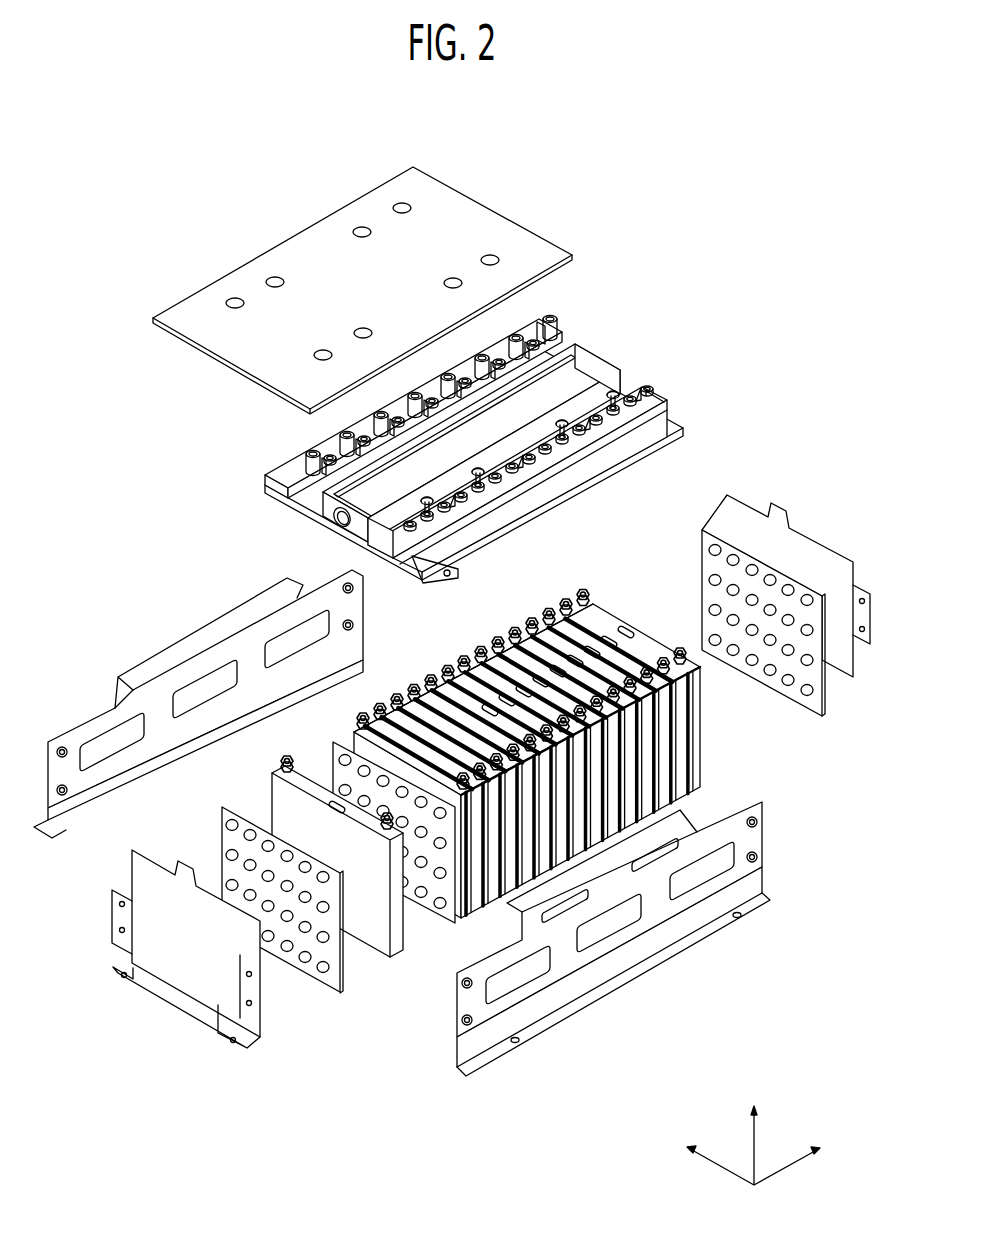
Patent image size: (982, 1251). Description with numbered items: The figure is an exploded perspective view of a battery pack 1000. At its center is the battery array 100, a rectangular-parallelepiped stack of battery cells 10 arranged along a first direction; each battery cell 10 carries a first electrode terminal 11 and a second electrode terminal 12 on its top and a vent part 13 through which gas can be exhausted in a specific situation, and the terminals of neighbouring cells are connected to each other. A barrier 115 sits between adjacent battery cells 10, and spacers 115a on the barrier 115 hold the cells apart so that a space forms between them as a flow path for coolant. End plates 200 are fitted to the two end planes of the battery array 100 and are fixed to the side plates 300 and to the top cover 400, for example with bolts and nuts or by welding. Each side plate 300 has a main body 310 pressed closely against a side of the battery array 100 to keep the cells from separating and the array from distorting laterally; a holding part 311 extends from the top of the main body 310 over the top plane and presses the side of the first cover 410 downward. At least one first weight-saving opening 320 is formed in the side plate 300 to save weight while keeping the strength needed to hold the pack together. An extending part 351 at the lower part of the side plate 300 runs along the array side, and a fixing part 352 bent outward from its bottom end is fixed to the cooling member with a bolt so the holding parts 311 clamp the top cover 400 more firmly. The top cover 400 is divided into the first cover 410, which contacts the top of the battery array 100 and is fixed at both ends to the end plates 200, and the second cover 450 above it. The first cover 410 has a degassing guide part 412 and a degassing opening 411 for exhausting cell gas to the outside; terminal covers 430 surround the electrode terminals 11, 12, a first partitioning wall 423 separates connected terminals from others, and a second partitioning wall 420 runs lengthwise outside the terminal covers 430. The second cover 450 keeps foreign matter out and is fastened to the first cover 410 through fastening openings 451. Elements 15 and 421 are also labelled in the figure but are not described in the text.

The battery pack 1000 is at (156, 151).
The battery cell 10 is at (284, 766).
The first electrode terminal 11 is at (575, 600).
The second electrode terminal 12 is at (680, 652).
The vent part 13 is at (630, 636).
The cell cap / vent 15 is at (443, 672).
The battery array 100 is at (703, 716).
The barrier 115 is at (222, 847).
The spacer 115a is at (231, 822).
The end plate 200 is at (190, 972).
The side plate 300 is at (170, 636).
The main body 310 is at (760, 832).
The holding part 311 is at (682, 808).
The first weight-saving opening 320 is at (614, 921).
The extending part 351 is at (758, 878).
The fixing part 352 is at (768, 898).
The top cover 400 is at (722, 263).
The first cover 410 is at (617, 357).
The degassing opening 411 is at (333, 522).
The degassing guide part 412 is at (600, 360).
The second partitioning wall 420 is at (665, 403).
The rail lip 421 is at (684, 427).
The first partitioning wall 423 is at (548, 327).
The terminal cover 430 is at (312, 458).
The second cover 450 is at (489, 210).
The fastening opening 451 is at (402, 203).